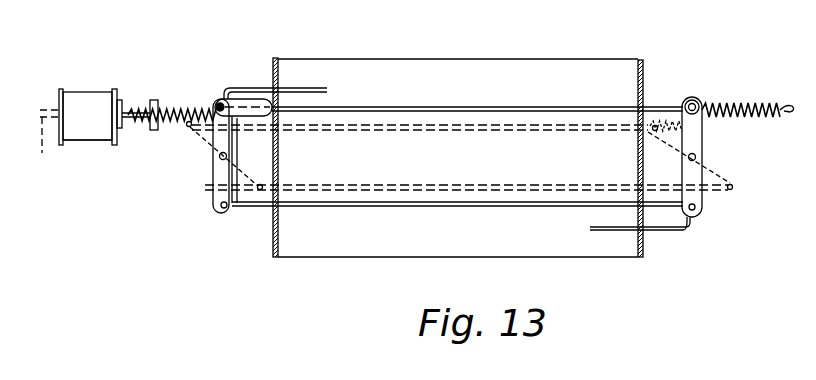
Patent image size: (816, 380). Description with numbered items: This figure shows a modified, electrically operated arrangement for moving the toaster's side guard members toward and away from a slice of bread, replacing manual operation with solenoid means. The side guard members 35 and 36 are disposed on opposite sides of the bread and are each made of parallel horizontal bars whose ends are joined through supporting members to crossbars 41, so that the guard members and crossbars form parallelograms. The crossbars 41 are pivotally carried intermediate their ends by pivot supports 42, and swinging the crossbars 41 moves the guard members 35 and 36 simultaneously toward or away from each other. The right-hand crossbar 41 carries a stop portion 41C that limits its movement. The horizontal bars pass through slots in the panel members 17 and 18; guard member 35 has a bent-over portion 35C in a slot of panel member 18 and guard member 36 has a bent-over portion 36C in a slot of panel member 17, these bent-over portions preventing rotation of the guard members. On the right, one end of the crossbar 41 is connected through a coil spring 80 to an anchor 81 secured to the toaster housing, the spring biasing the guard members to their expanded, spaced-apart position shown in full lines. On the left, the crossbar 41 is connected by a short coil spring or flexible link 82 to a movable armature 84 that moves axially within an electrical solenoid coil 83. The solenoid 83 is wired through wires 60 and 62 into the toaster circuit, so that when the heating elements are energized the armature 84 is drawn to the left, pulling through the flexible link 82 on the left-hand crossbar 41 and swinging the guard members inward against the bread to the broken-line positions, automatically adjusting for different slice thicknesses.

The panel member 17 is at (273, 58).
The panel member 18 is at (645, 77).
The side guard member 35 is at (467, 185).
The bent-over portion 35C is at (662, 233).
The side guard member 36 is at (525, 108).
The bent-over portion 36C is at (253, 88).
The crossbar 41 is at (213, 192).
The stop portion 41C is at (238, 100).
The pivot support 42 is at (217, 158).
The wire 60 is at (67, 142).
The wire 62 is at (110, 142).
The coil spring 80 is at (747, 104).
The anchor 81 is at (810, 91).
The coil spring or flexible link 82 is at (143, 112).
The solenoid coil 83 is at (80, 92).
The armature 84 is at (165, 148).